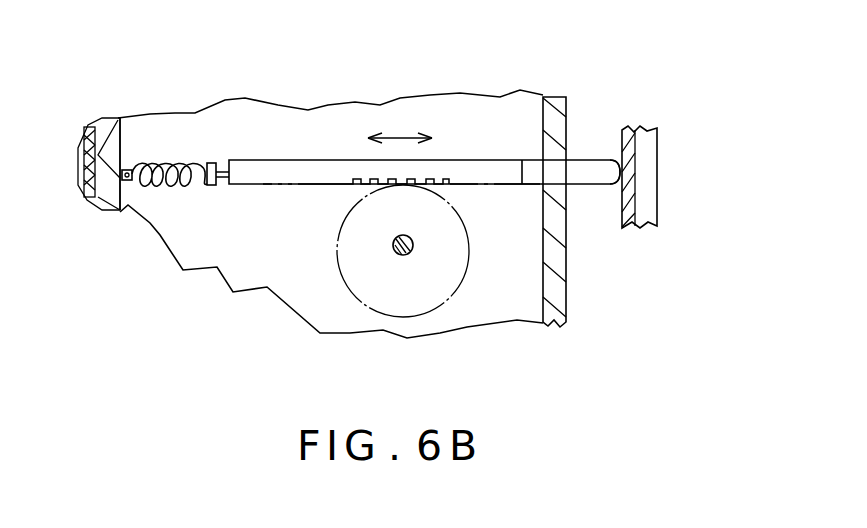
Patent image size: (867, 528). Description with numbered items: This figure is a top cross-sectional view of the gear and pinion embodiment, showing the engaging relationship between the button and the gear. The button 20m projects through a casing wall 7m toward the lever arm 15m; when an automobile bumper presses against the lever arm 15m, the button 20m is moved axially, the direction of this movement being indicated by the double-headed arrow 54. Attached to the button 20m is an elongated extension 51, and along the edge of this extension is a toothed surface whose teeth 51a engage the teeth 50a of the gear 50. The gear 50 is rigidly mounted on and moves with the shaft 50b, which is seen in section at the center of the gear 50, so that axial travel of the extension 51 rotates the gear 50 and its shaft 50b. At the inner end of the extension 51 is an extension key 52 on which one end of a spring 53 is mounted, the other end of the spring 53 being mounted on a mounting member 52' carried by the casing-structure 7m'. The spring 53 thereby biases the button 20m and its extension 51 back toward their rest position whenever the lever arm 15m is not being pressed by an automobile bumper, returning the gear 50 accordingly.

The wall 7m is at (583, 206).
The casing-structure 7m' is at (105, 196).
The lever arm 15m is at (645, 173).
The button 20m is at (608, 178).
The gear 50 is at (452, 276).
The teeth of gear 50a is at (447, 190).
The shaft 50b is at (400, 256).
The elongated extension 51 is at (471, 160).
The teeth 51a is at (330, 186).
The extension key 52 is at (238, 151).
The mounting member 52' is at (151, 147).
The spring 53 is at (166, 186).
The direction of movement 54 is at (401, 138).